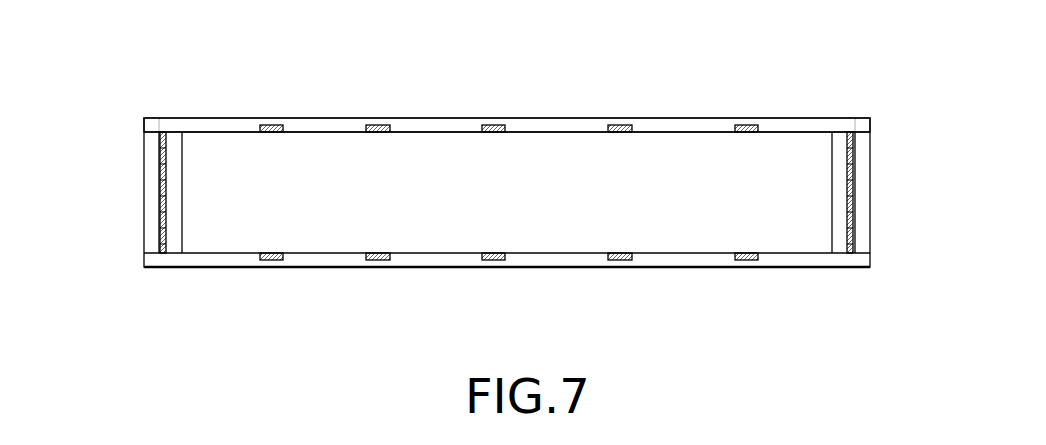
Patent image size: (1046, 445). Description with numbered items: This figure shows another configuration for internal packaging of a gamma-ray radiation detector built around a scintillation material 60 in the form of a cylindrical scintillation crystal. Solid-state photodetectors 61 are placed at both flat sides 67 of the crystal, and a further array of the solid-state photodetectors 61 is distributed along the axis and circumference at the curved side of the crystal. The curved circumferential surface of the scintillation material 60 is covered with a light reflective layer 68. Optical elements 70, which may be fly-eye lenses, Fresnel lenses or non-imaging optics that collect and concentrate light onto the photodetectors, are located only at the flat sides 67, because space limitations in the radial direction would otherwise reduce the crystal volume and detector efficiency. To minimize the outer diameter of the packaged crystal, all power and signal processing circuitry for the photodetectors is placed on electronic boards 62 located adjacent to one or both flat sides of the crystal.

The scintillation material 60 is at (425, 241).
The solid-state photodetectors 61 is at (270, 125).
The electronic board 62 is at (144, 232).
The flat sides 67 is at (832, 212).
The light reflective layer 68 is at (543, 130).
The optical elements 70 is at (174, 130).